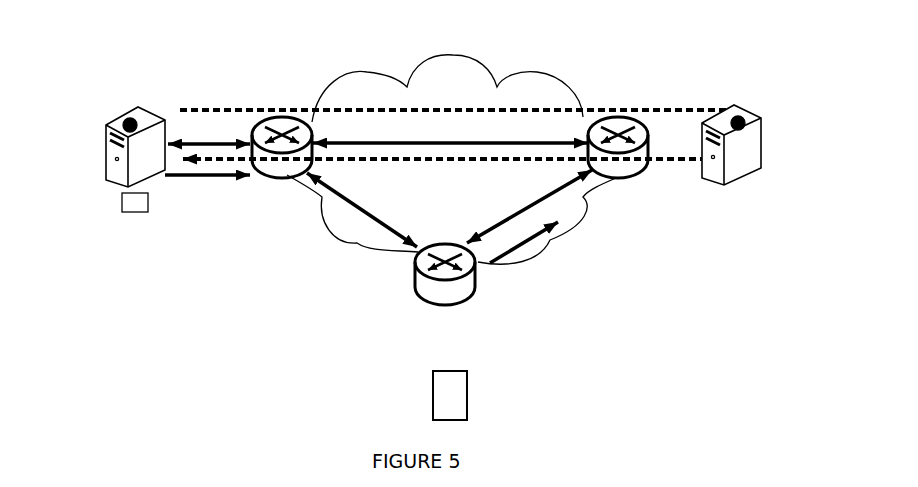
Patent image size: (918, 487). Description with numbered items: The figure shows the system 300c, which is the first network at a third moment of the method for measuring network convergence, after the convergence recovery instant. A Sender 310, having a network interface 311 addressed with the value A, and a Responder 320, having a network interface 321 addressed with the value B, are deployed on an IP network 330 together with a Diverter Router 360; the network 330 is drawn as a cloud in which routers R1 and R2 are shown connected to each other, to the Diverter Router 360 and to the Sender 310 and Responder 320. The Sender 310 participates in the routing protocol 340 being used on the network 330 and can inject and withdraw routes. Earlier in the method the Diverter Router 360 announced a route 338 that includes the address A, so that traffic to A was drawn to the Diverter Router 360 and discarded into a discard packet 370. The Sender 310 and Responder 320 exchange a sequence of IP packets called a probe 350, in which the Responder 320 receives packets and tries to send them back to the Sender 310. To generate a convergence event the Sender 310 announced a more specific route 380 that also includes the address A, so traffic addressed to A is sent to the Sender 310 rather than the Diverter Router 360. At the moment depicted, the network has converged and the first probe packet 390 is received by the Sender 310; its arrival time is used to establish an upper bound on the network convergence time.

The system 300c is at (88, 44).
The Sender 310 is at (107, 157).
The network interface 311 is at (119, 124).
The Responder 320 is at (762, 158).
The network interface 321 is at (746, 117).
The IP network 330 is at (451, 159).
The route R_A' 338 is at (497, 233).
The routing protocol 340 is at (380, 191).
The probe 350 is at (459, 131).
The Diverter Router 360 is at (415, 276).
The discard packet 370 is at (432, 392).
The route R_A 380 is at (207, 175).
The first probe packet 390 is at (182, 158).
The first router R1 is at (282, 147).
The second router R2 is at (618, 147).